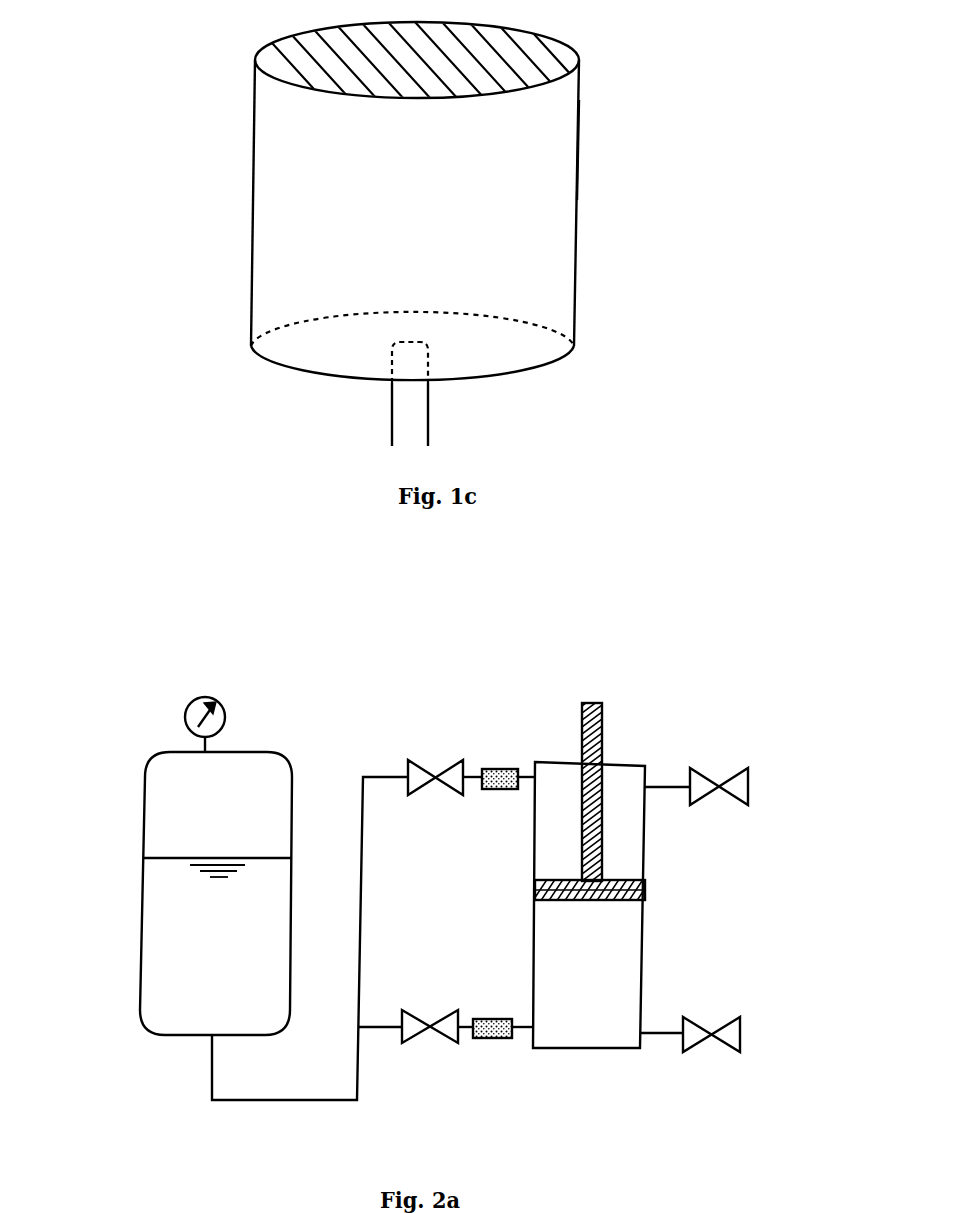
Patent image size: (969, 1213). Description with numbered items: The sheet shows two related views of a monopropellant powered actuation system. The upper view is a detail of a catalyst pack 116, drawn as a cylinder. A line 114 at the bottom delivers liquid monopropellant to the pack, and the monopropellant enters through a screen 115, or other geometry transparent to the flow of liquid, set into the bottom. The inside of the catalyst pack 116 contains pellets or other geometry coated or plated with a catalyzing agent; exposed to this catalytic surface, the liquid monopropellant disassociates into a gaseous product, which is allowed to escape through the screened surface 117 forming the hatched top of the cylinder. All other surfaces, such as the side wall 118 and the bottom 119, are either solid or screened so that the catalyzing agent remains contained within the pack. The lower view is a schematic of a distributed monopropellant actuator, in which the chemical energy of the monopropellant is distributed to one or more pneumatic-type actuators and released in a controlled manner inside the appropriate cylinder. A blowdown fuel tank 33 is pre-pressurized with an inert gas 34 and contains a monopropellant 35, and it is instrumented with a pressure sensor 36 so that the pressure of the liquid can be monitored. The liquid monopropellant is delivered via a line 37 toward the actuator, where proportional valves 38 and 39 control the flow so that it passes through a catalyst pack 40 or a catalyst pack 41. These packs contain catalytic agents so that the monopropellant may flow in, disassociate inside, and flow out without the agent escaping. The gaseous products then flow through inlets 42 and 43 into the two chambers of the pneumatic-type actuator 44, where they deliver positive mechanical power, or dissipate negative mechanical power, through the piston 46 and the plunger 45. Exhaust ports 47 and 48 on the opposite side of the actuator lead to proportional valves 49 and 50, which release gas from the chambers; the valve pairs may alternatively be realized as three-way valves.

In FIG. 1C, the line 114 is at (430, 418).
In FIG. 1C, the screen 115 is at (417, 349).
In FIG. 1C, the catalyst pack 116 is at (433, 217).
In FIG. 1C, the screened surface 117 is at (500, 68).
In FIG. 1C, the surface 118 is at (582, 148).
In FIG. 1C, the surface 119 is at (307, 335).
In FIG. 2A, the blowdown fuel tank 33 is at (140, 893).
In FIG. 2A, the inert gas 34 is at (177, 807).
In FIG. 2A, the monopropellant 35 is at (175, 948).
In FIG. 2A, the pressure sensor 36 is at (177, 728).
In FIG. 2A, the line 37 is at (212, 1064).
In FIG. 2A, the proportional valve 38 is at (402, 754).
In FIG. 2A, the proportional valve 39 is at (430, 1040).
In FIG. 2A, the catalyst pack 40 is at (495, 765).
In FIG. 2A, the catalyst pack 41 is at (508, 1045).
In FIG. 2A, the inlet 42 is at (533, 783).
In FIG. 2A, the inlet 43 is at (530, 1023).
In FIG. 2A, the pneumatic-type actuator 44 is at (647, 957).
In FIG. 2A, the plunger 45 is at (606, 722).
In FIG. 2A, the piston 46 is at (560, 903).
In FIG. 2A, the exhaust port 47 is at (647, 787).
In FIG. 2A, the exhaust port 48 is at (640, 1033).
In FIG. 2A, the proportional valve 49 is at (722, 772).
In FIG. 2A, the proportional valve 50 is at (715, 1045).